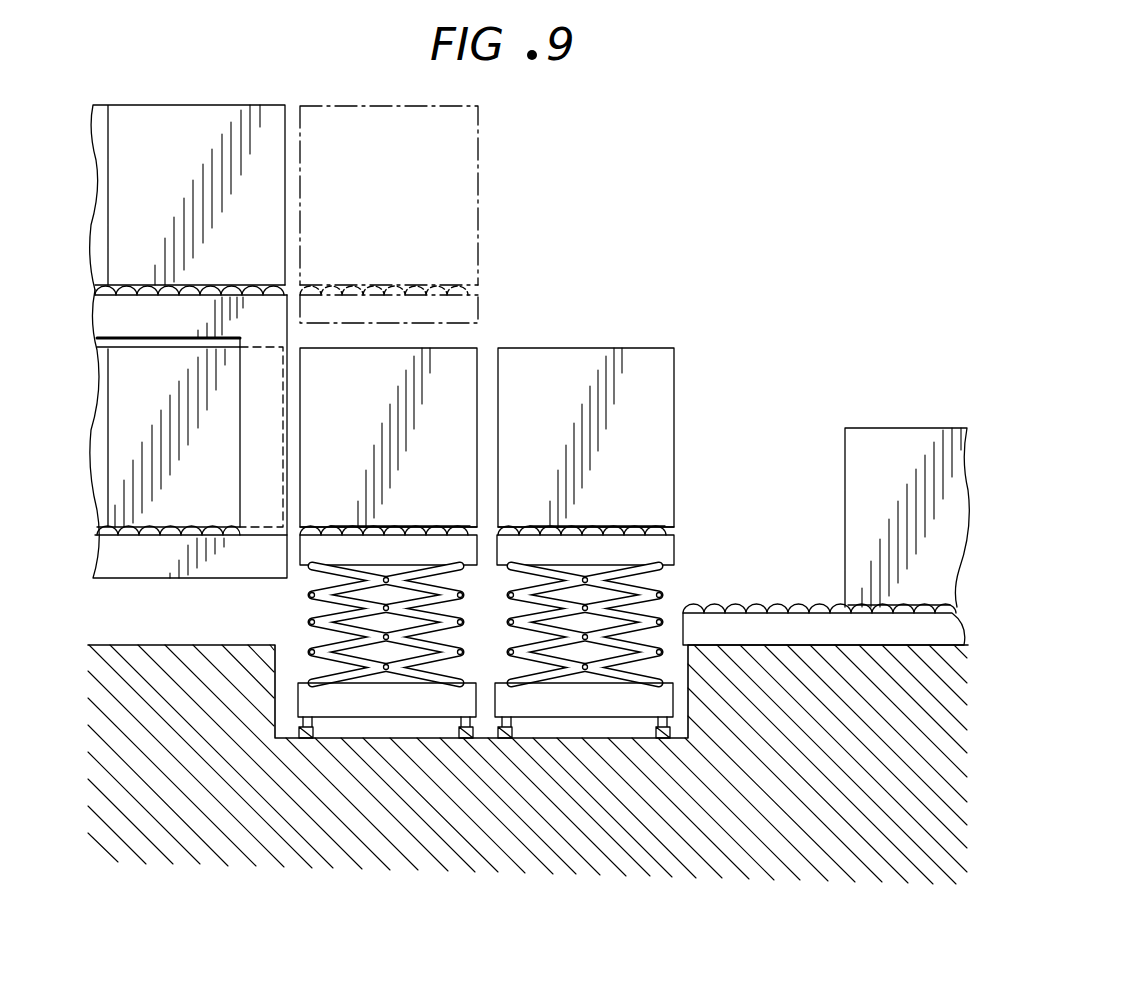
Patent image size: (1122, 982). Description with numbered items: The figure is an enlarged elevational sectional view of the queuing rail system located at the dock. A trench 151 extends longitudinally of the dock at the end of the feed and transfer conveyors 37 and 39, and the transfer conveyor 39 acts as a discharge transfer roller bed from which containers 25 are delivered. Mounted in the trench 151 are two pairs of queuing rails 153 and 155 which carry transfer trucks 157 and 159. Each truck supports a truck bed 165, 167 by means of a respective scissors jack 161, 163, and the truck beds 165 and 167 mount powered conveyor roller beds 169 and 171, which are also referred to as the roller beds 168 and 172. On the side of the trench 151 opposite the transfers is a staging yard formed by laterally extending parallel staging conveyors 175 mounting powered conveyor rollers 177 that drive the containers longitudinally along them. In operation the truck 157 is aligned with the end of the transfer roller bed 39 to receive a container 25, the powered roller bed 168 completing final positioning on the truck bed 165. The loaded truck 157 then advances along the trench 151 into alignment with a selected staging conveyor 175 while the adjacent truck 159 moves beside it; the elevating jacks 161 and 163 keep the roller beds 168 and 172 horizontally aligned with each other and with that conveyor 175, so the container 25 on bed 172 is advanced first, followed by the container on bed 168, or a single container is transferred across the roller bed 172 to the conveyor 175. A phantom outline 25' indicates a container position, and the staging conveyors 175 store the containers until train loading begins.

The container 25 is at (604, 457).
The block (phantom position) 25' is at (430, 214).
The feed conveyor 37 is at (210, 281).
The transfer conveyor 39 is at (174, 524).
The trench 151 is at (276, 657).
The queuing rails 153 is at (306, 738).
The queuing rails 155 is at (510, 738).
The transfer truck 157 is at (393, 720).
The transfer truck 159 is at (597, 720).
The scissors jack 161 is at (310, 596).
The scissors jack 163 is at (660, 584).
The truck bed 165 is at (352, 511).
The truck bed 167 is at (614, 513).
The powered roller bed 168 is at (389, 524).
The powered conveyor roller bed 169 is at (352, 529).
The powered conveyor roller bed 171 is at (550, 529).
The roller bed 172 is at (611, 524).
The staging conveyor 175 is at (817, 597).
The powered conveyor rollers 177 is at (786, 607).